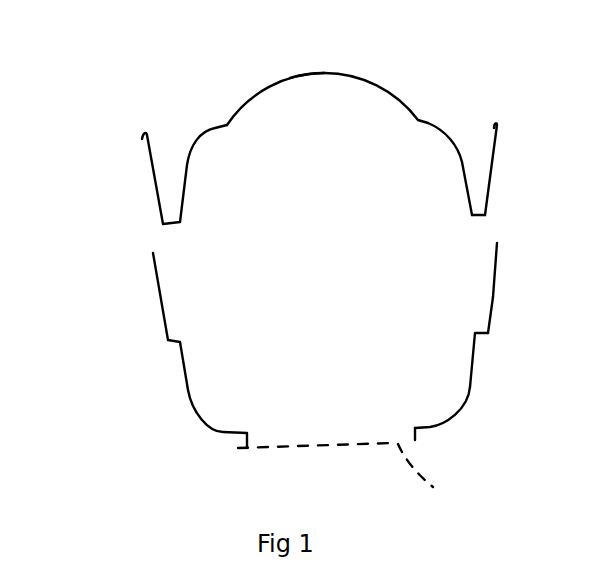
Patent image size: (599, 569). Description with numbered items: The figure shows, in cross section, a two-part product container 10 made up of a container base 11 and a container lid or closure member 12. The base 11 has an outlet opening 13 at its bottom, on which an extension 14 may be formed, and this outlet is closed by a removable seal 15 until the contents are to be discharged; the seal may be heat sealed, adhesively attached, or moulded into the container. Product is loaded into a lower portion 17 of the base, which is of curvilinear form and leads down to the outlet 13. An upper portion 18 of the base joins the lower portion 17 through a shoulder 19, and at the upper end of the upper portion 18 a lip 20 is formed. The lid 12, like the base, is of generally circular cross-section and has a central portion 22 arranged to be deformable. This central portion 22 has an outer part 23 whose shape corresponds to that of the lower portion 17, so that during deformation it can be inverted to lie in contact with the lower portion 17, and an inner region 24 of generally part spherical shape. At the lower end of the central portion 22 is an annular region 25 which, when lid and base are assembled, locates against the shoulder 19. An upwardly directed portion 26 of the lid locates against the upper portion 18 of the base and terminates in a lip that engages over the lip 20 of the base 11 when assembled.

The container 10 is at (108, 227).
The container base 11 is at (168, 418).
The container lid 12 is at (236, 78).
The outlet opening 13 is at (357, 465).
The extension 14 is at (417, 433).
The removable seal 15 is at (434, 474).
The lower portion 17 is at (470, 387).
The upper portion 18 is at (493, 297).
The shoulder 19 is at (478, 336).
The lip 20 is at (497, 243).
The central portion 22 is at (406, 77).
The outer part 23 is at (460, 162).
The inner region 24 is at (298, 80).
The annular region 25 is at (477, 223).
The upwardly directed portion 26 is at (497, 125).